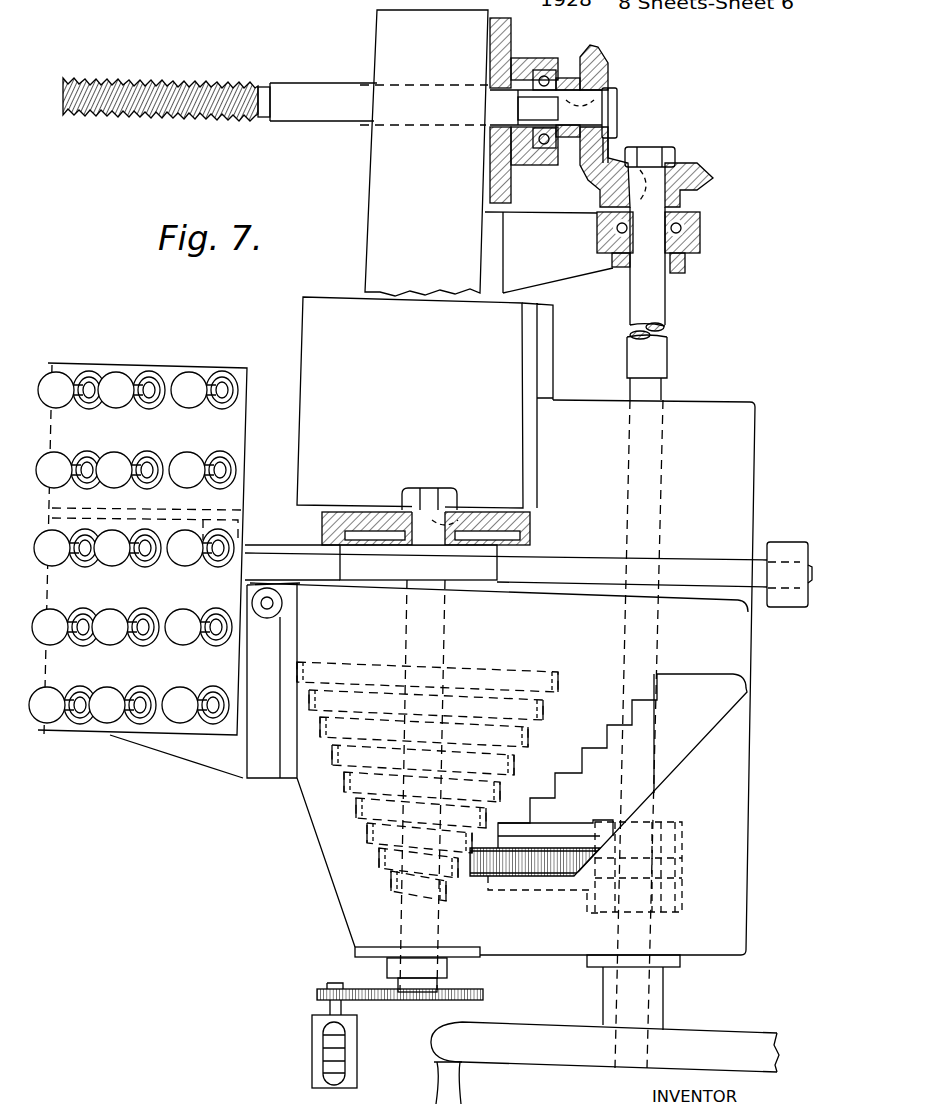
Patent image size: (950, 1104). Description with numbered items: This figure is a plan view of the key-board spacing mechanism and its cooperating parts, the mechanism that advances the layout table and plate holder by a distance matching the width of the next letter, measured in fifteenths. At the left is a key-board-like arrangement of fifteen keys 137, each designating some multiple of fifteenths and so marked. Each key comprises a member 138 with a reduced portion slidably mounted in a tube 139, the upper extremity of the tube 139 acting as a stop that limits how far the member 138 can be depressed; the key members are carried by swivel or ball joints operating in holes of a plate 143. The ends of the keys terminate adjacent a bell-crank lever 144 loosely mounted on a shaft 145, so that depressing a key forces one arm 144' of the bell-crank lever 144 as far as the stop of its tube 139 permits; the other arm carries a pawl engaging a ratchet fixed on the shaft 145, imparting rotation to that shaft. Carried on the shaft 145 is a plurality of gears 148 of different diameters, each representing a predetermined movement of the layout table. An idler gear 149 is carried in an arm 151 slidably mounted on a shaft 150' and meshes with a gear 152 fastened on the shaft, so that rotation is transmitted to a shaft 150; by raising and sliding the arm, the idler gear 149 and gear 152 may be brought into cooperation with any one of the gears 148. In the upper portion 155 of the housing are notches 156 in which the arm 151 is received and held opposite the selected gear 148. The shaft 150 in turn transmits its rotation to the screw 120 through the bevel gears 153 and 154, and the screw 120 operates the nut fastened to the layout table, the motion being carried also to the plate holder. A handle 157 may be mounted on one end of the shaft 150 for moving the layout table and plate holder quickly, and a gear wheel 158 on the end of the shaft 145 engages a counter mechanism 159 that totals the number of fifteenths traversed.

The screw 120 is at (197, 112).
The keys 137 is at (176, 455).
The member 138 is at (147, 517).
The tube 139 is at (212, 548).
The plate 143 is at (87, 729).
The bell-crank lever 144 is at (528, 574).
The bell-crank lever arm 144' is at (418, 580).
The shaft 145 is at (428, 518).
The gears 148 is at (539, 728).
The idler gear 149 is at (545, 874).
The shaft 150 is at (652, 637).
The shaft 150' is at (662, 773).
The arm 151 is at (586, 842).
The gear 152 is at (668, 862).
The bevel gear 153 is at (711, 174).
The bevel gear 154 is at (606, 62).
The upper portion of the housing 155 is at (733, 664).
The notches 156 is at (607, 740).
The handle 157 is at (434, 1091).
The gear wheel 158 is at (482, 997).
The counter mechanism 159 is at (313, 1030).